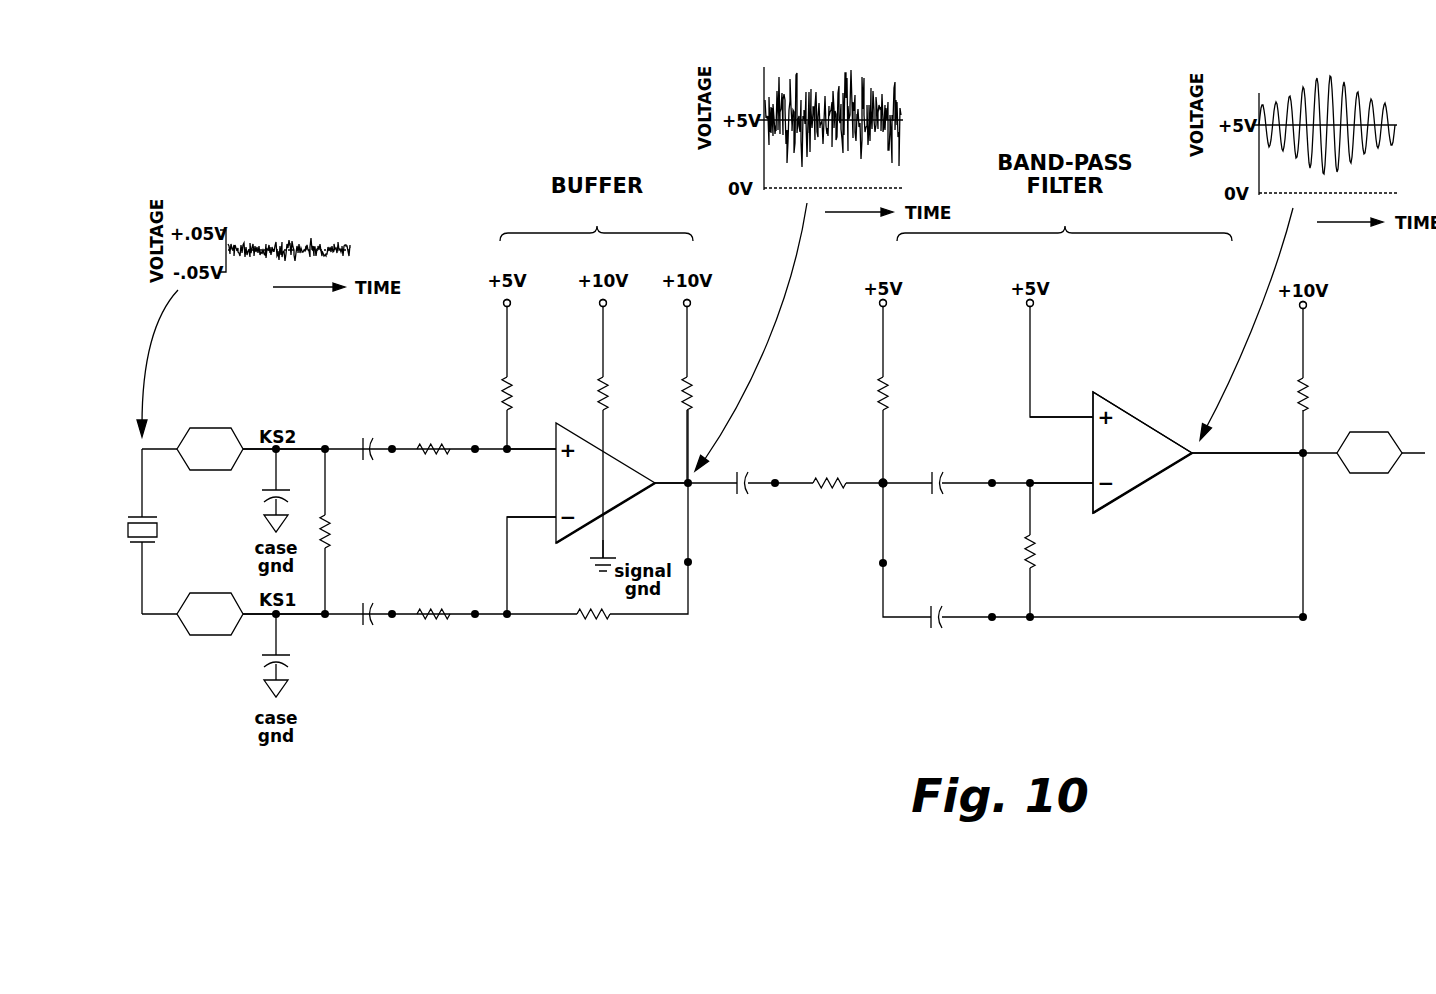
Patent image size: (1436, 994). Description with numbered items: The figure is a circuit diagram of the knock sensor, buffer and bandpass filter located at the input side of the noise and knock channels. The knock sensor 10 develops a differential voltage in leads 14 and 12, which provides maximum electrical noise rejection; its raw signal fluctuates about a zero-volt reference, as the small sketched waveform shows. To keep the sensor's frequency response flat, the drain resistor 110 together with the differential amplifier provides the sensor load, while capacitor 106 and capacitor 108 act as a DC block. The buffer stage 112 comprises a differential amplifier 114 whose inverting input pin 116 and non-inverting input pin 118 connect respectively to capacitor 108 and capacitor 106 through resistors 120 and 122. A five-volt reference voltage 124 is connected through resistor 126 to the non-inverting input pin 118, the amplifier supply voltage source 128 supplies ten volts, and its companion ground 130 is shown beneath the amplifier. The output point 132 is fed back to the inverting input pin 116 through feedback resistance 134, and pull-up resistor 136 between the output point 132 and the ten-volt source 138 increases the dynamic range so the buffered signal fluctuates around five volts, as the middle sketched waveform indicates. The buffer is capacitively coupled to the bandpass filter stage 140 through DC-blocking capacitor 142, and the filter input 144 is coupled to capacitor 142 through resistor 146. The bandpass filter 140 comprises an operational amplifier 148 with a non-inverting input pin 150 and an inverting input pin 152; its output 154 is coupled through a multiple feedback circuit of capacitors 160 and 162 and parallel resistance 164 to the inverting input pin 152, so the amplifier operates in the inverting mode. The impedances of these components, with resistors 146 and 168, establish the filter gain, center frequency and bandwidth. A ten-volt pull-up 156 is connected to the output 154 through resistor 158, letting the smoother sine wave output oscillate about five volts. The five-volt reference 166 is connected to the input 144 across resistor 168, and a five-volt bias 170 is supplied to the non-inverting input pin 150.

The knock sensor 10 is at (138, 533).
The lead 12 is at (305, 616).
The lead 14 is at (306, 447).
The capacitor 106 is at (357, 442).
The capacitor 108 is at (375, 612).
The drain resistor 110 is at (330, 528).
The buffer stage 112 is at (596, 220).
The differential amplifier 114 is at (573, 432).
The inverting input pin 116 is at (553, 519).
The non-inverting input pin 118 is at (553, 452).
The resistor 120 is at (434, 618).
The resistor 122 is at (433, 432).
The reference voltage 124 is at (504, 303).
The resistor 126 is at (503, 380).
The amplifier supply voltage source 128 is at (600, 303).
The ground 130 is at (612, 556).
The output point 132 is at (652, 479).
The feedback resistance 134 is at (582, 620).
The pull-up resistor 136 is at (684, 380).
The ten-volt source 138 is at (690, 305).
The bandpass filter stage 140 is at (1064, 219).
The capacitor 142 is at (733, 494).
The input 144 is at (881, 480).
The resistor 146 is at (814, 491).
The operational amplifier 148 is at (1133, 414).
The non-inverting input pin 150 is at (1093, 415).
The inverting input pin 152 is at (1093, 502).
The output 154 is at (1196, 456).
The ten-volt pull-up 156 is at (1308, 305).
The resistor 158 is at (1310, 400).
The capacitor 160 is at (931, 478).
The capacitor 162 is at (925, 623).
The parallel resistance 164 is at (1024, 537).
The five-volt reference 166 is at (890, 303).
The resistor 168 is at (888, 385).
The five-volt bias 170 is at (1034, 304).